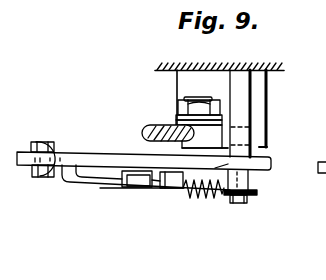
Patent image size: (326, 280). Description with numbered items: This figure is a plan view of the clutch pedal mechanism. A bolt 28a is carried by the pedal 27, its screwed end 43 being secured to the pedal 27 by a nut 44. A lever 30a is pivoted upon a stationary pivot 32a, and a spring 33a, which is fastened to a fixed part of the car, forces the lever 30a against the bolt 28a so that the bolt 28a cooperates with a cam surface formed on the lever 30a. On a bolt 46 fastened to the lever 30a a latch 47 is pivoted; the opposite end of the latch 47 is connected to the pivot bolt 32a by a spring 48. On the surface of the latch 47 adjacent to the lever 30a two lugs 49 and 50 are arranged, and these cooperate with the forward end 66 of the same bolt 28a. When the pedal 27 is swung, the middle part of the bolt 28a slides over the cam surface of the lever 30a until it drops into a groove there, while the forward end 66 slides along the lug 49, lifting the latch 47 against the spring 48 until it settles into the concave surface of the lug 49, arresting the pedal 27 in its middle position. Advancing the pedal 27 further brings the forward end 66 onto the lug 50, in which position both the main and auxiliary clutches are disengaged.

The pedal 27 is at (154, 126).
The bolt 28a is at (192, 161).
The lever 30a is at (88, 154).
The stationary pivot 32a is at (243, 118).
The spring 33a is at (56, 141).
The screwed end 43 is at (190, 97).
The nut 44 is at (215, 107).
The bolt 46 is at (43, 177).
The latch 47 is at (108, 186).
The spring 48 is at (205, 194).
The lug 49 is at (175, 189).
The lug 50 is at (142, 181).
The forward end of bolt 66 is at (215, 168).